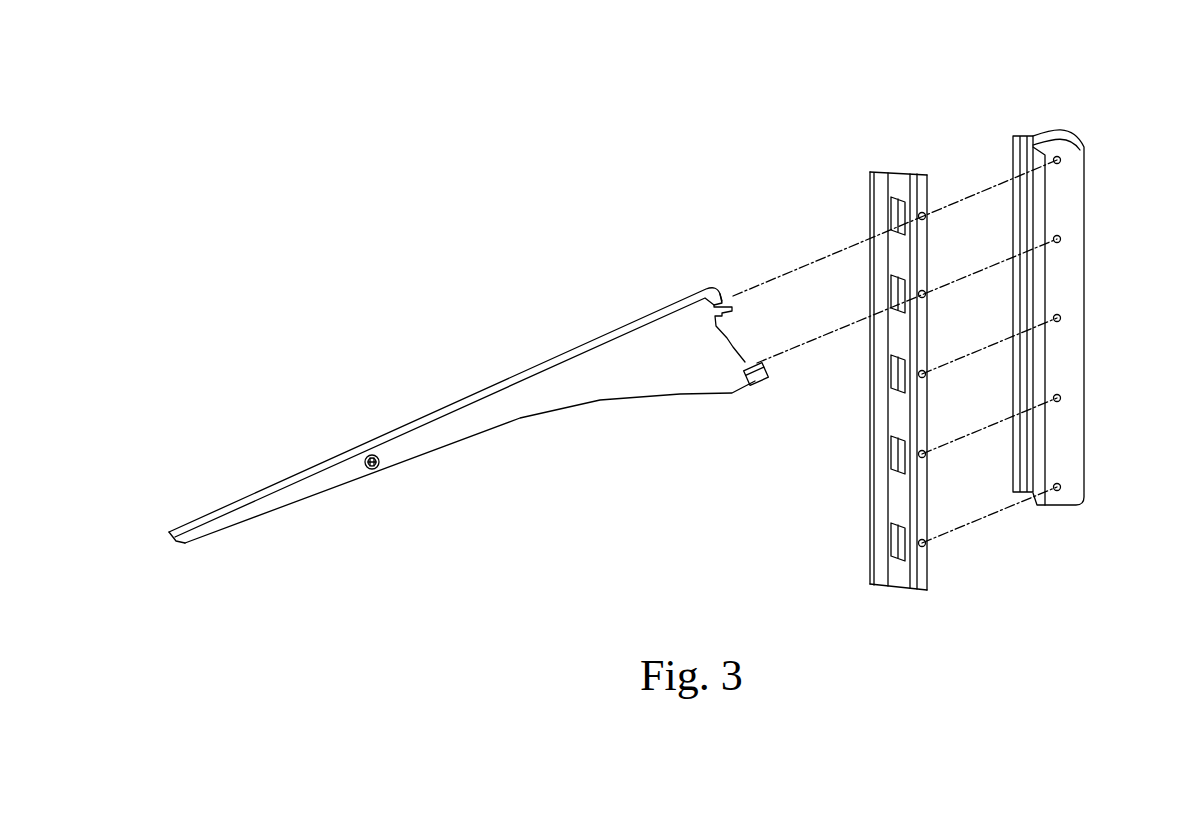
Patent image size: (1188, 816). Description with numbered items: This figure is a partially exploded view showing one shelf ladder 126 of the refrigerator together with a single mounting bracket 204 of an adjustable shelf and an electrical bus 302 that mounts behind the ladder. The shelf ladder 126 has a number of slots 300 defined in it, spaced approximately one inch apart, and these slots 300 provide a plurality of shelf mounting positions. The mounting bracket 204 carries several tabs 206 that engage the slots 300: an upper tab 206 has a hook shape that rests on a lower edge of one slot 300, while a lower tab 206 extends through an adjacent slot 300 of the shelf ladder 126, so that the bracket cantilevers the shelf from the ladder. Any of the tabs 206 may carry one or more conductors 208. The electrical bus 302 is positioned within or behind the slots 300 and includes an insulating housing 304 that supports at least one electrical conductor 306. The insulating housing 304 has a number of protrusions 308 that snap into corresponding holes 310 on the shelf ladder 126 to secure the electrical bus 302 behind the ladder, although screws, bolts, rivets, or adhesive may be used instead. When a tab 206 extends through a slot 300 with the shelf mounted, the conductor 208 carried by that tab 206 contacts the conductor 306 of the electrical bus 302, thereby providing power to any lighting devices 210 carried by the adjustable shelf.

The shelf ladder 126 is at (902, 182).
The mounting bracket 204 is at (452, 422).
The tab 206 is at (722, 289).
The conductor 208 is at (766, 372).
The lighting device 210 is at (374, 473).
The slot 300 is at (900, 208).
The electrical bus 302 is at (1078, 282).
The insulating housing 304 is at (1085, 292).
The electrical conductor 306 is at (1036, 137).
The protrusion 308 is at (1060, 397).
The hole 310 is at (925, 457).